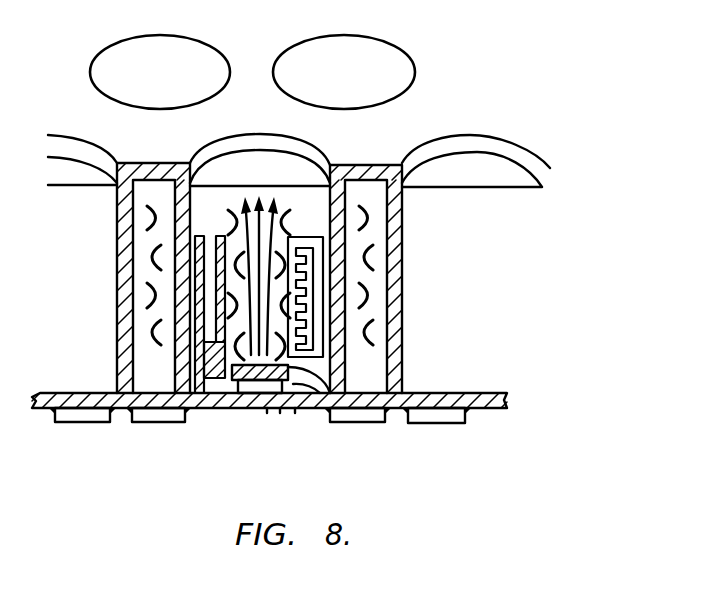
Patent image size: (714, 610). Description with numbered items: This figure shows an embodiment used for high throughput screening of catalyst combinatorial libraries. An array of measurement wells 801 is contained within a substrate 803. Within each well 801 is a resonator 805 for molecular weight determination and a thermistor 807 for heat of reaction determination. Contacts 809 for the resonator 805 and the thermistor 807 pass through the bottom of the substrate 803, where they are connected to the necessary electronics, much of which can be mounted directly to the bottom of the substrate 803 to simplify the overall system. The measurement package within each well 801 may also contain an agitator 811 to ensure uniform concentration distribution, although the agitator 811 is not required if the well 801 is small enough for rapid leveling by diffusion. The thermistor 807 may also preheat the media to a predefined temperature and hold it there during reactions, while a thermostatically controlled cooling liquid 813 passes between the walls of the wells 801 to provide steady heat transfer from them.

The measurement well 801 is at (218, 58).
The substrate 803 is at (465, 105).
The resonator 805 is at (200, 298).
The thermistor 807 is at (297, 242).
The contacts 809 is at (205, 406).
The agitator 811 is at (265, 385).
The cooling liquid 813 is at (363, 372).